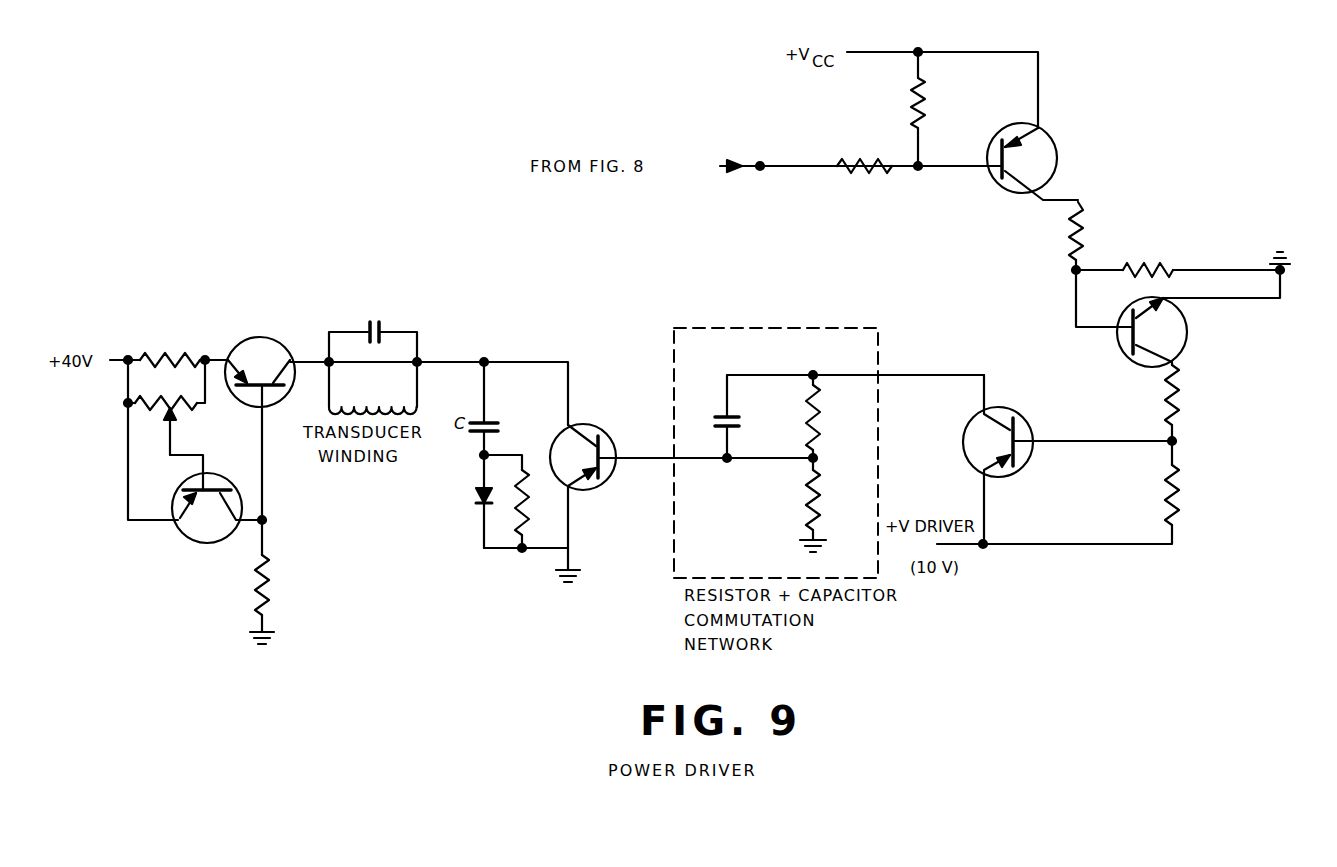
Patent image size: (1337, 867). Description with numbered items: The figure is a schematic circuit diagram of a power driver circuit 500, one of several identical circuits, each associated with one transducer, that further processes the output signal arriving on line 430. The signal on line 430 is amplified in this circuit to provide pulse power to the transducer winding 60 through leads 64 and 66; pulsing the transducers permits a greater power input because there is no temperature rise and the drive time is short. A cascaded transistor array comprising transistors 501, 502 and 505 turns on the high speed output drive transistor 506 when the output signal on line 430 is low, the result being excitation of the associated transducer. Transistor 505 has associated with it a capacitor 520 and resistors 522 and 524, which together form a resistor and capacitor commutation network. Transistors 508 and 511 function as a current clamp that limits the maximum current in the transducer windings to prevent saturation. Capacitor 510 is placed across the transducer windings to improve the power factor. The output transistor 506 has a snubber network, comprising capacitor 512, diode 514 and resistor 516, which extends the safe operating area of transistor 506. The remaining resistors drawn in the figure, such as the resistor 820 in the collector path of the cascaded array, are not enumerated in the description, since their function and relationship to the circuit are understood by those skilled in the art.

The line 430 is at (738, 168).
The transistor 502 is at (1023, 193).
The resistor 820 is at (1183, 257).
The transistor 501 is at (1188, 333).
The transistor 505 is at (1003, 476).
The power driver circuit 500 is at (1124, 584).
The capacitor 520 is at (715, 416).
The resistor 522 is at (826, 396).
The resistor 524 is at (820, 500).
The lead 64 is at (481, 320).
The capacitor 512 is at (467, 408).
The diode 514 is at (477, 505).
The resistor 516 is at (520, 522).
The high speed output drive transistor 506 is at (587, 490).
The lead 66 is at (305, 358).
The capacitor 510 is at (373, 327).
The transducer winding 60 is at (378, 403).
The transistor 511 is at (181, 536).
The transistor 508 is at (265, 306).